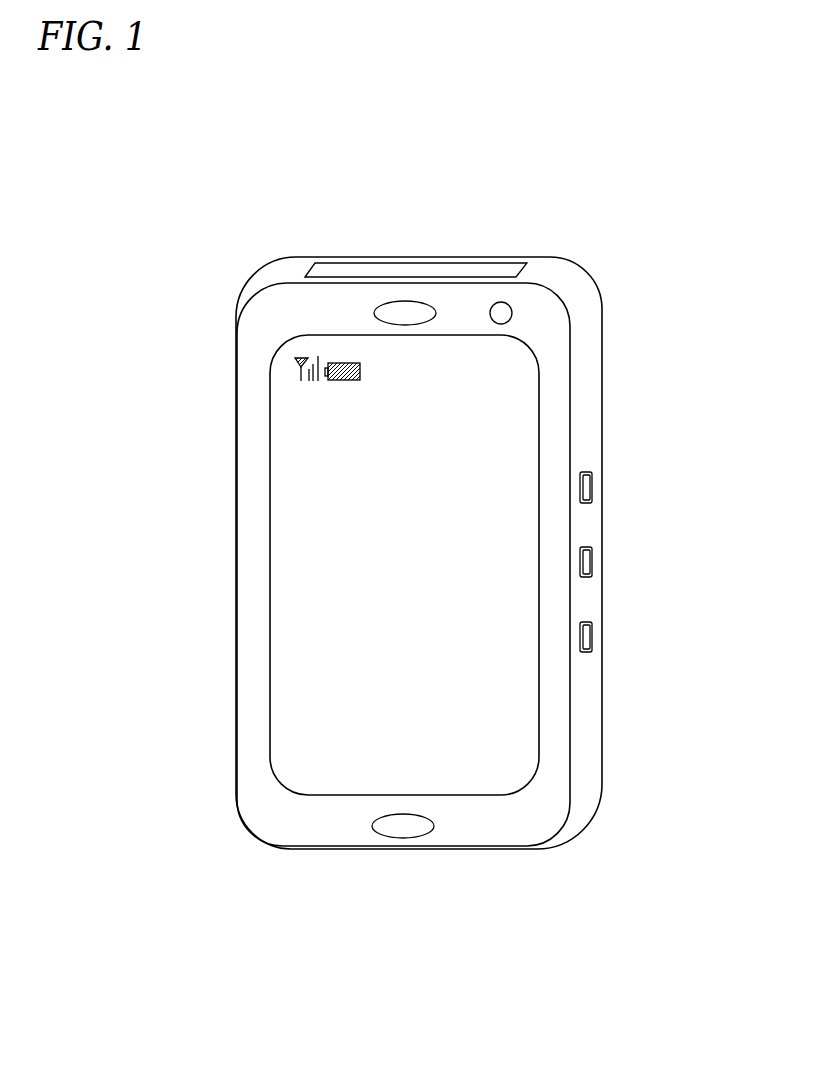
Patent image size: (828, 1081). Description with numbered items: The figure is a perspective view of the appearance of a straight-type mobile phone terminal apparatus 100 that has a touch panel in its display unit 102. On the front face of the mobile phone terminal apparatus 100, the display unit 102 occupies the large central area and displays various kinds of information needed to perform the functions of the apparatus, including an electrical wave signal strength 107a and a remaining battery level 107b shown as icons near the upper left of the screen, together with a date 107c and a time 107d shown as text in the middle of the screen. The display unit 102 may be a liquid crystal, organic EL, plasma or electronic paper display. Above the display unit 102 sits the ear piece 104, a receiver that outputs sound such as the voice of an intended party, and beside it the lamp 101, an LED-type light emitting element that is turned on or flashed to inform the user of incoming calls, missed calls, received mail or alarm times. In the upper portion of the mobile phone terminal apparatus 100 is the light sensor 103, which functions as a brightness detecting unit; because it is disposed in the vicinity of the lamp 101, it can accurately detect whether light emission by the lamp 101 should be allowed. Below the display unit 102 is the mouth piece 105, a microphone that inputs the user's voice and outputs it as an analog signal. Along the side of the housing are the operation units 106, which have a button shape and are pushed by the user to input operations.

The mobile phone terminal apparatus 100 is at (608, 258).
The lamp 101 is at (503, 312).
The display unit 102 is at (525, 683).
The light sensor 103 is at (478, 268).
The ear piece 104 is at (380, 311).
The mouth piece 105 is at (383, 833).
The operation unit 106 is at (594, 486).
The electrical wave signal strength 107a is at (298, 372).
The remaining battery level 107b is at (322, 384).
The date 107c is at (347, 528).
The time 107d is at (347, 655).